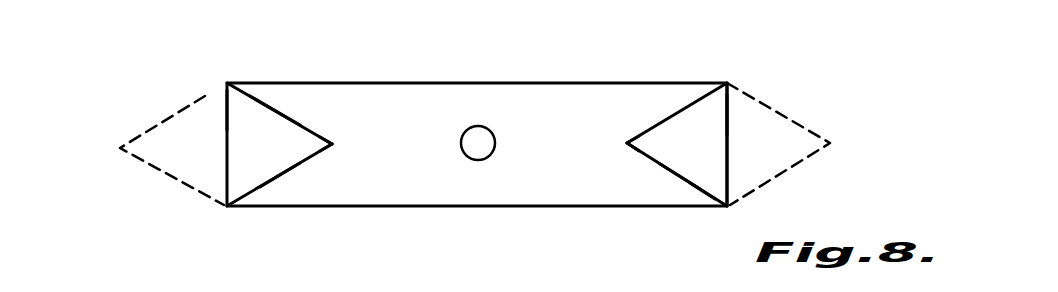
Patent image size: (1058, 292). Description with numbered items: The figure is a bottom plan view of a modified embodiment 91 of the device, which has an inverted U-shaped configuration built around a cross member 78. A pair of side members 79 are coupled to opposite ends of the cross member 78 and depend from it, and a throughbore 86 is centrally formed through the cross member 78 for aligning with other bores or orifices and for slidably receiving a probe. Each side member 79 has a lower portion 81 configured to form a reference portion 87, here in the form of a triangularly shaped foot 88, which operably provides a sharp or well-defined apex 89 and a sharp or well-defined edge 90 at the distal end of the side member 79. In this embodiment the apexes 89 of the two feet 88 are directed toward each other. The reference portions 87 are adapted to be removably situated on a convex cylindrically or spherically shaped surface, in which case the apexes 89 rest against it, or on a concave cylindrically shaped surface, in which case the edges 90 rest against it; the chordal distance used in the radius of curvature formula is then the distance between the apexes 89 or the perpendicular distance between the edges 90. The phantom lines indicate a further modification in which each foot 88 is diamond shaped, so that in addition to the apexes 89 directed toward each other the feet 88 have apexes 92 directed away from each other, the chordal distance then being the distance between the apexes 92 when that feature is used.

The cross member 78 is at (385, 81).
The side members 79 is at (268, 183).
The lower portion 81 is at (288, 137).
The throughbore 86 is at (493, 132).
The reference portions 87 is at (282, 162).
The triangularly shaped feet 88 is at (275, 115).
The apexes 89 is at (333, 144).
The edges 90 is at (226, 120).
The modified embodiment 91 is at (767, 63).
The apexes 92 is at (120, 150).